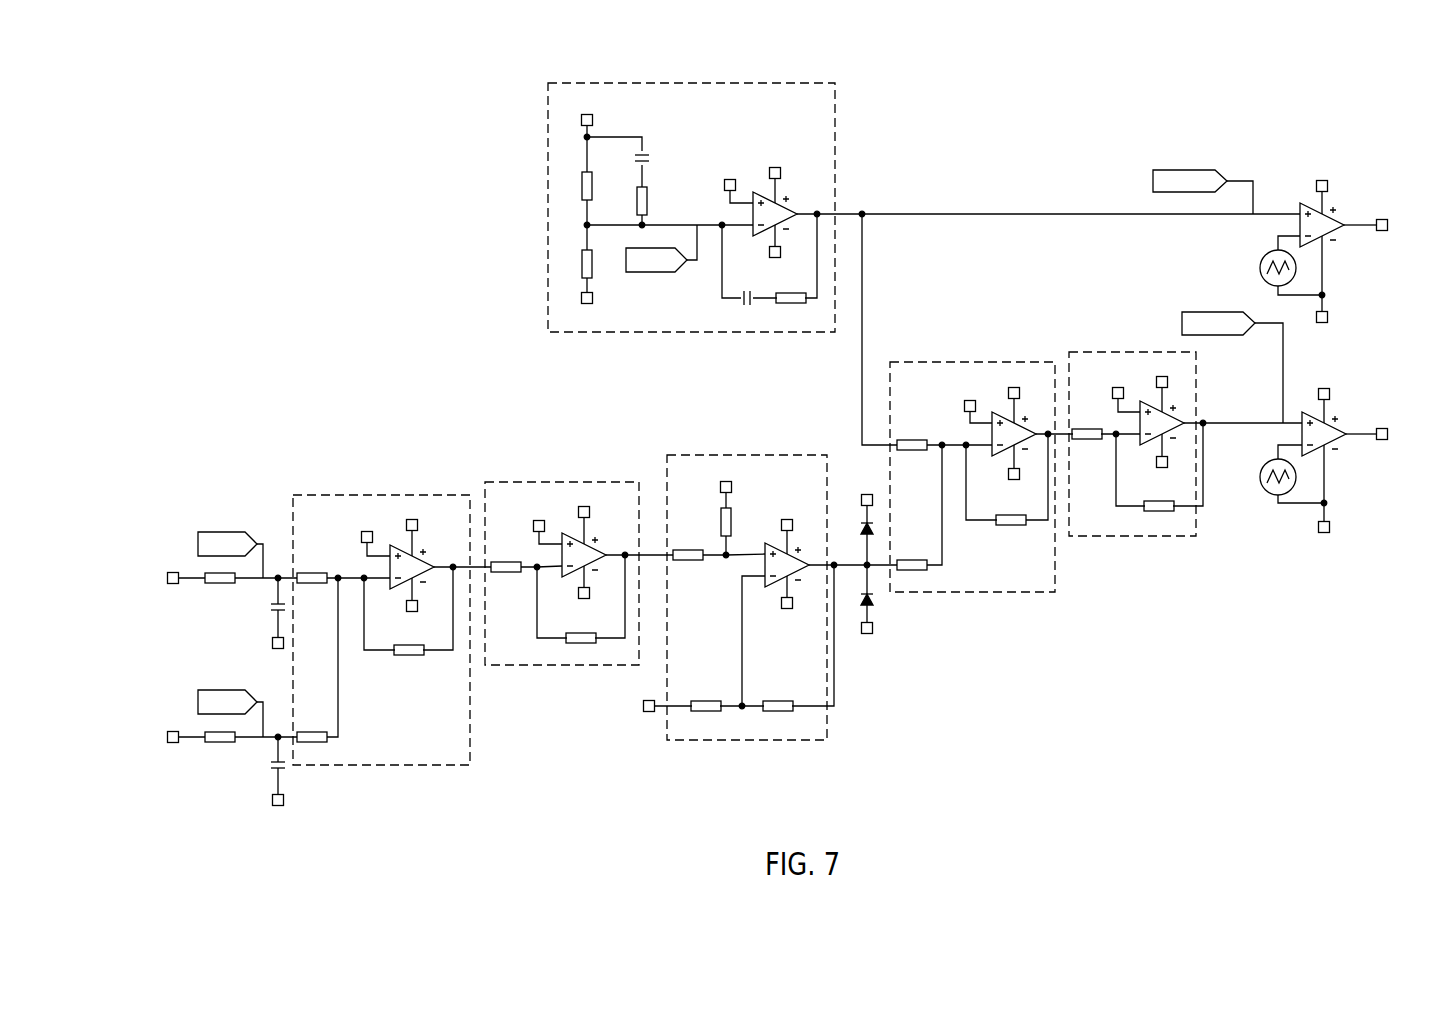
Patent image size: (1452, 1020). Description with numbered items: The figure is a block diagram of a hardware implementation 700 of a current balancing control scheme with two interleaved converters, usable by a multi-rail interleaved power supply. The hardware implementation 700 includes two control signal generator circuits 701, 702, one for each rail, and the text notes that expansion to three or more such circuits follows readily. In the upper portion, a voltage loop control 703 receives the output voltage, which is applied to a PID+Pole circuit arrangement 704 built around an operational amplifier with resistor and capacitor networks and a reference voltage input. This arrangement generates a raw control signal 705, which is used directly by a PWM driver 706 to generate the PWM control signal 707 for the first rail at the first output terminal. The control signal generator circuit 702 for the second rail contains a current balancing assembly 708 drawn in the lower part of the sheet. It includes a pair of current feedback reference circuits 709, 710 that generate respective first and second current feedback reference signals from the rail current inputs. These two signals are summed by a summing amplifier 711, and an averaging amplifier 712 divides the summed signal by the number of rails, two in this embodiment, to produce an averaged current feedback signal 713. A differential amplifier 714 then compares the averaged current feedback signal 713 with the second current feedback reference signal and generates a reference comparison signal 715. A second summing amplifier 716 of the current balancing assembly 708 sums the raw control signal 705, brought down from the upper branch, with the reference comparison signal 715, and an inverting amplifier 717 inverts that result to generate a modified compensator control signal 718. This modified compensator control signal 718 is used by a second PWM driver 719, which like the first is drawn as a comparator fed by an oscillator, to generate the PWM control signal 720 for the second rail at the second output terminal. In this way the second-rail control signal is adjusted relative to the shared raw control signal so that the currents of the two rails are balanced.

The hardware implementation 700 is at (338, 90).
The control signal generator circuit 701 is at (452, 185).
The control signal generator circuit 702 is at (1364, 579).
The voltage loop control 703 is at (620, 83).
The PID+Pole circuit arrangement 704 is at (757, 102).
The raw control signal 705 is at (995, 214).
The PWM driver 706 is at (1272, 148).
The PWM control signal 707 is at (1358, 227).
The current balancing assembly 708 is at (488, 366).
The current feedback reference circuit 709 is at (211, 513).
The current feedback reference circuit 710 is at (211, 675).
The summing amplifier 711 is at (438, 495).
The averaging amplifier 712 is at (589, 482).
The averaged current feedback signal 713 is at (612, 549).
The differential amplifier 714 is at (759, 455).
The reference comparison signal 715 is at (815, 560).
The second summing amplifier 716 is at (986, 362).
The inverting amplifier 717 is at (1141, 352).
The modified compensator control signal 718 is at (1258, 423).
The PWM driver 719 is at (1386, 405).
The PWM control signal 720 is at (1358, 435).